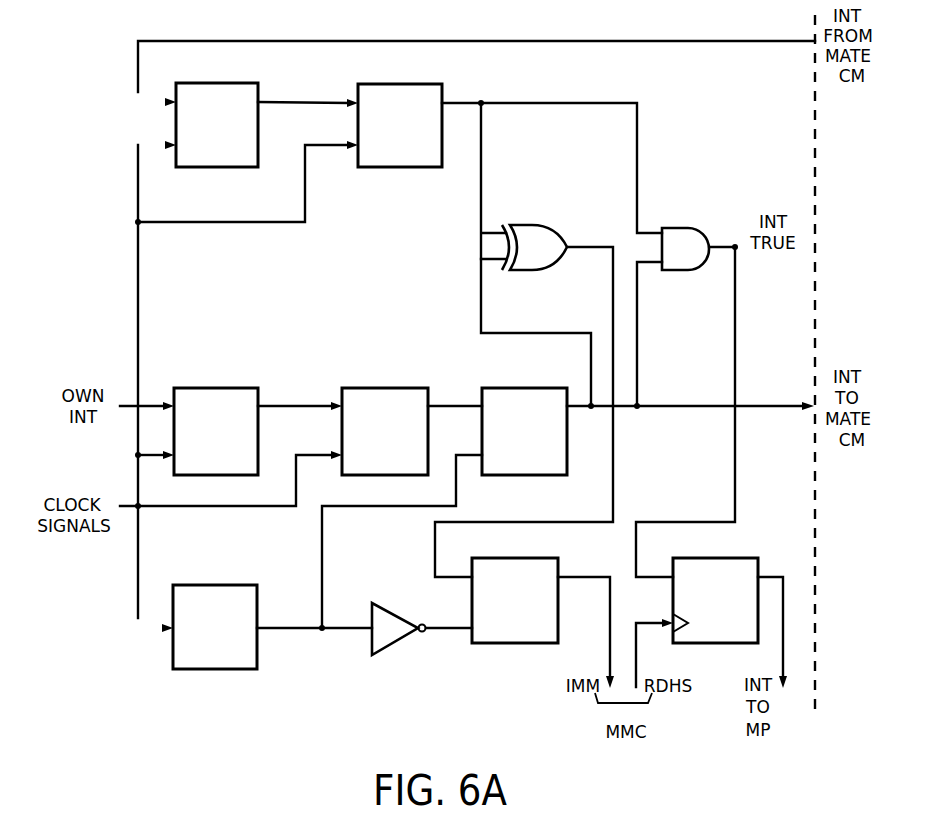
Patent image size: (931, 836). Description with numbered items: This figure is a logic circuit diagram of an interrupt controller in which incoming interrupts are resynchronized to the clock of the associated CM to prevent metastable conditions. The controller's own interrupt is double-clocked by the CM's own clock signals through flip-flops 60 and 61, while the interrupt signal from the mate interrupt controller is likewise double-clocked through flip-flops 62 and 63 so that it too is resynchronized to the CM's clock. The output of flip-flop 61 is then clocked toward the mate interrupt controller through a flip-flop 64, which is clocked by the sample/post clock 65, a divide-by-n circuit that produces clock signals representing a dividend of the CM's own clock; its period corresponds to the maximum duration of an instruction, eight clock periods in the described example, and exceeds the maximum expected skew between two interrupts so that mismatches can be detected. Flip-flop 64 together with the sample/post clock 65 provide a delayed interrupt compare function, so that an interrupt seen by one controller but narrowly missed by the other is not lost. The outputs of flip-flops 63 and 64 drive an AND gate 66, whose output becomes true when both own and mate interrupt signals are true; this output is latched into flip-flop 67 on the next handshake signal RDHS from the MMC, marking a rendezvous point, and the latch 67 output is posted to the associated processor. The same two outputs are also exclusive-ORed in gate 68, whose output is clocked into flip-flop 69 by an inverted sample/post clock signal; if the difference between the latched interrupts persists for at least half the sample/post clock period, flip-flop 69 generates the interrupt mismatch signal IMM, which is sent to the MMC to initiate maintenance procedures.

The flip-flop 60 is at (213, 388).
The flip-flop 61 is at (383, 388).
The flip-flop 62 is at (235, 83).
The flip-flop 63 is at (407, 84).
The flip-flop 64 is at (522, 388).
The sample/post clock 65 is at (210, 670).
The AND gate 66 is at (680, 228).
The flip-flop 67 is at (723, 558).
The X-OR gate 68 is at (530, 225).
The flip-flop 69 is at (505, 647).